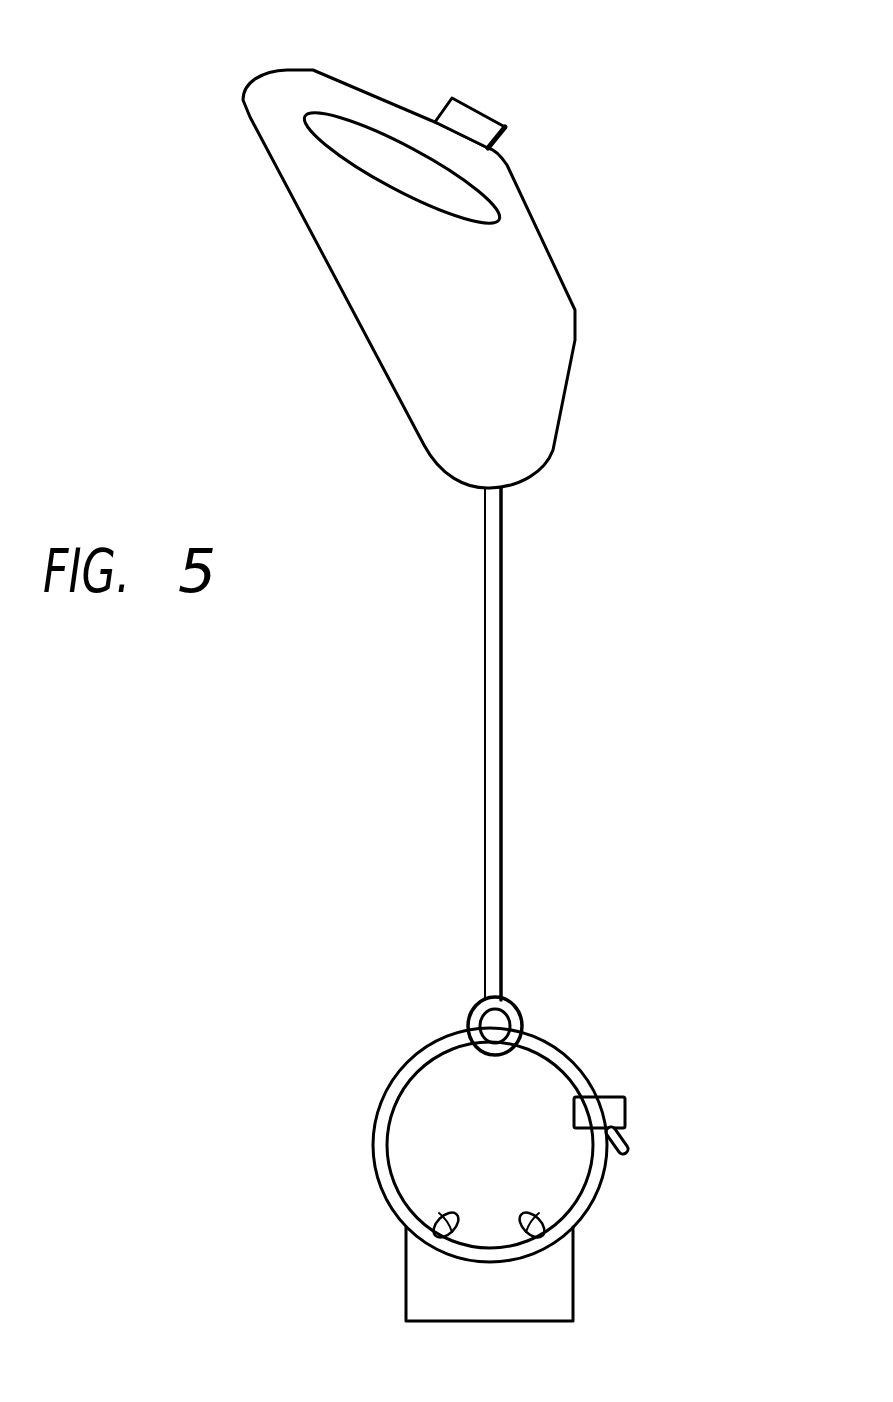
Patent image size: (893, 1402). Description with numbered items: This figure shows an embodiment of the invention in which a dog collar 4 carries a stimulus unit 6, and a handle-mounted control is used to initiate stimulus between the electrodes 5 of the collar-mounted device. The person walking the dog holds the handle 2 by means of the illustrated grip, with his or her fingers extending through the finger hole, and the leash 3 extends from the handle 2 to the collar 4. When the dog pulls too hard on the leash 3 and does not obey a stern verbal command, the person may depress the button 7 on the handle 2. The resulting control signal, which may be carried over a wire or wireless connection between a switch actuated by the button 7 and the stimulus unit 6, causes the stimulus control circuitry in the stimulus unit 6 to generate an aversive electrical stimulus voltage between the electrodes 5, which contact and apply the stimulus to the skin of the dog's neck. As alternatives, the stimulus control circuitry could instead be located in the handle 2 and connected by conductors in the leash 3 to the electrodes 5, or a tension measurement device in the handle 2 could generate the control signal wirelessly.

The handle 2 is at (542, 350).
The leash 3 is at (485, 608).
The dog collar 4 is at (598, 1183).
The electrodes 5 is at (520, 1212).
The stimulus unit 6 is at (573, 1270).
The button 7 is at (477, 108).